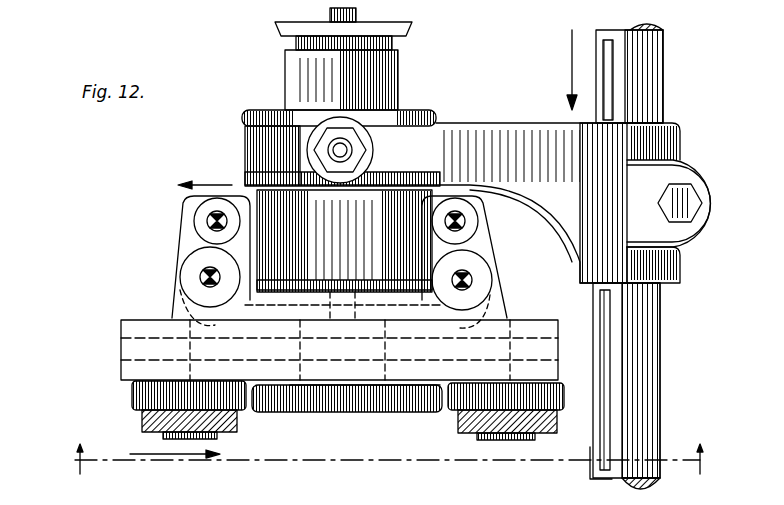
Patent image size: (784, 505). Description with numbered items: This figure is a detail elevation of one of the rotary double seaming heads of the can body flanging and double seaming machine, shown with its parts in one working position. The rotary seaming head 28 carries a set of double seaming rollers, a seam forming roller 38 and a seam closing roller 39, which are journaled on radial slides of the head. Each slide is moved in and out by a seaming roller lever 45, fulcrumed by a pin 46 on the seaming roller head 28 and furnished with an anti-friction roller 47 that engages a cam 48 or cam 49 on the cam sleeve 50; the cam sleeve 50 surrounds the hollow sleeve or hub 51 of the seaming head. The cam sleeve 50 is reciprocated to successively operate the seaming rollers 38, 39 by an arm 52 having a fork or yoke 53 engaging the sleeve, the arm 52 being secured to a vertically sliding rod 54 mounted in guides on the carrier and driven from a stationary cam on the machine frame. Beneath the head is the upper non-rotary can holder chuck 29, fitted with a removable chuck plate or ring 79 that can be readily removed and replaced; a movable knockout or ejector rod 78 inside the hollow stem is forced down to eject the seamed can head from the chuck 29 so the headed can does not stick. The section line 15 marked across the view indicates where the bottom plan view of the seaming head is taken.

The section line 15 is at (388, 459).
The rotary seaming head 28 is at (120, 323).
The upper can holder chuck 29 is at (350, 413).
The seam forming roller 38 is at (140, 416).
The seam closing roller 39 is at (470, 420).
The seaming roller lever 45 is at (178, 312).
The pin 46 is at (200, 277).
The anti-friction roller 47 is at (193, 222).
The cam 48 is at (342, 255).
The cam 49 is at (188, 196).
The cam sleeve 50 is at (418, 110).
The hollow sleeve or hub 51 is at (398, 77).
The arm 52 is at (452, 125).
The fork or yoke 53 is at (355, 150).
The vertically sliding rod 54 is at (664, 98).
The knockout or ejector rod 78 is at (357, 15).
The removable chuck plate or ring 79 is at (256, 413).